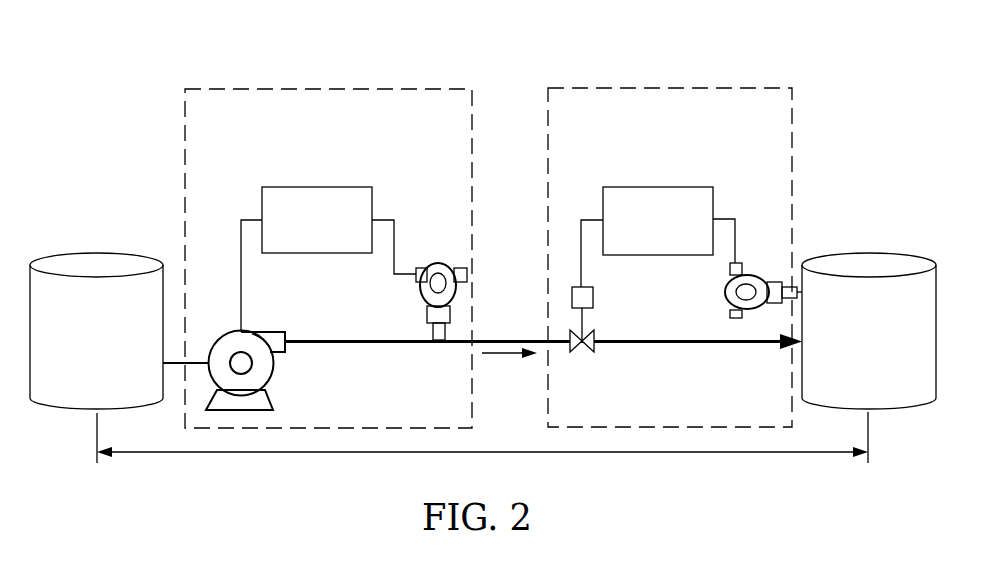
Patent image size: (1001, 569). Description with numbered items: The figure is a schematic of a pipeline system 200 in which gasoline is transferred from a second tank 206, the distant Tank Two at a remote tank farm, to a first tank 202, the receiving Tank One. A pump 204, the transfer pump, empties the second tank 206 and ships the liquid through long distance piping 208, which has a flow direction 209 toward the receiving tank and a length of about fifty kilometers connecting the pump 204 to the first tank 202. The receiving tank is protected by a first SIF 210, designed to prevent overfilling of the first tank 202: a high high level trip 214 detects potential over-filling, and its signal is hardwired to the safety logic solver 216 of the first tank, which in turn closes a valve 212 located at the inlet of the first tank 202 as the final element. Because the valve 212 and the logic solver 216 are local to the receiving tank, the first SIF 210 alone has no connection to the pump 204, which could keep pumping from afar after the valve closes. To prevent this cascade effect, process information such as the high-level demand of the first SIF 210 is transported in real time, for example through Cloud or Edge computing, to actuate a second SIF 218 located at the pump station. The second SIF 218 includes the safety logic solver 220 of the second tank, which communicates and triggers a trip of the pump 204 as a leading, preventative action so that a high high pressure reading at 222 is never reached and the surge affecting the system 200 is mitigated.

The pipeline system 200 is at (624, 59).
The first tank 202 is at (880, 253).
The pump 204 is at (272, 373).
The second tank 206 is at (88, 253).
The long distance piping 208 is at (395, 345).
The flow direction 209 is at (505, 355).
The first SIF 210 is at (798, 167).
The valve 212 is at (594, 348).
The high high level trip 214 is at (724, 290).
The safety logic solver 216 is at (660, 187).
The second SIF 218 is at (180, 167).
The safety logic solver 220 is at (316, 187).
The high high pressure reading 222 is at (425, 296).